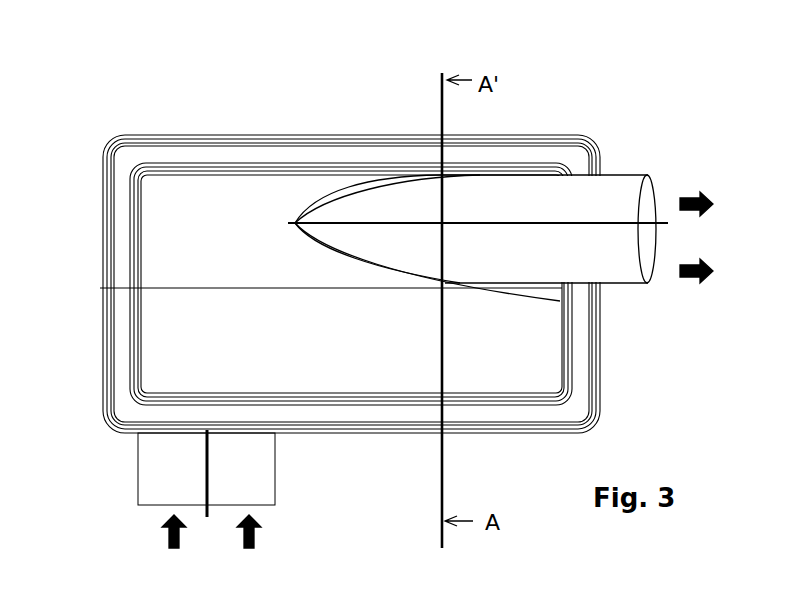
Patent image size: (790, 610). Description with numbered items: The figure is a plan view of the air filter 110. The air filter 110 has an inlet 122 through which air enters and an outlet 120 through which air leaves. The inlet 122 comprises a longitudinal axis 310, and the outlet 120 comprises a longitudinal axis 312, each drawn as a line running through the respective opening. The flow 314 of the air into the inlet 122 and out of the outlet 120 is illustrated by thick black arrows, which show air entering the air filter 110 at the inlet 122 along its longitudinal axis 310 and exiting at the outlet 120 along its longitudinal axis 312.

The air filter 110 is at (209, 107).
The outlet 120 is at (624, 305).
The inlet 122 is at (296, 486).
The longitudinal axis 310 is at (192, 465).
The longitudinal axis 312 is at (598, 202).
The flow 314 is at (275, 545).